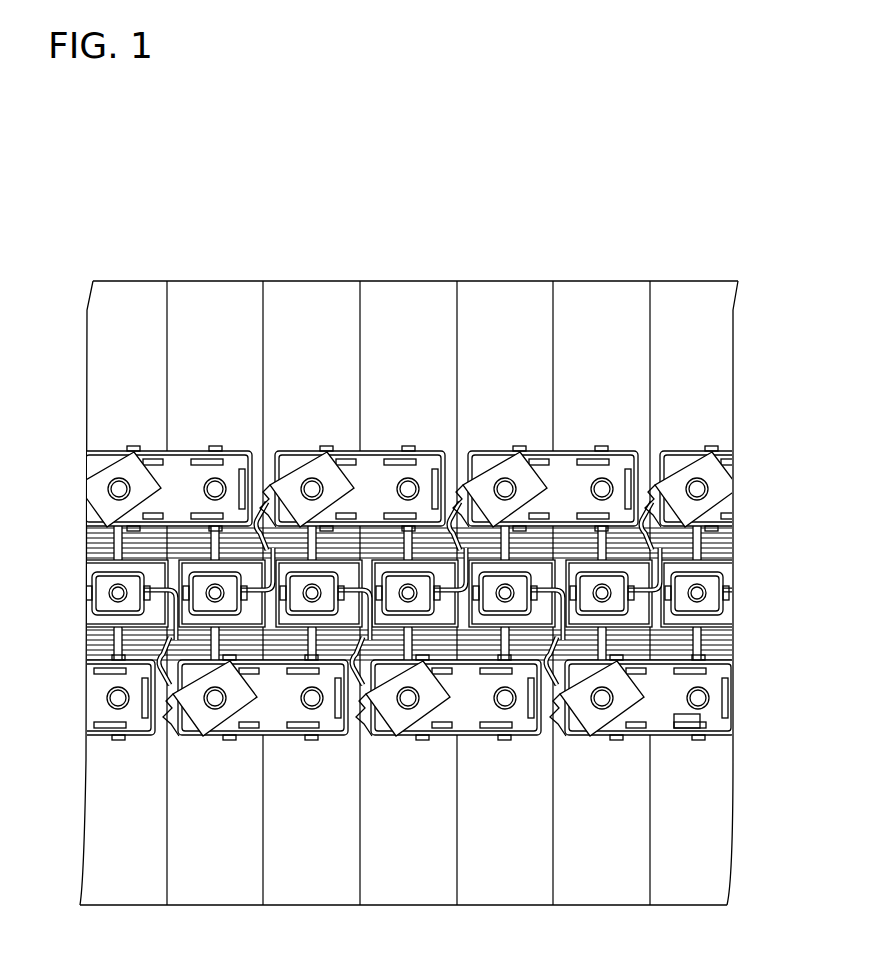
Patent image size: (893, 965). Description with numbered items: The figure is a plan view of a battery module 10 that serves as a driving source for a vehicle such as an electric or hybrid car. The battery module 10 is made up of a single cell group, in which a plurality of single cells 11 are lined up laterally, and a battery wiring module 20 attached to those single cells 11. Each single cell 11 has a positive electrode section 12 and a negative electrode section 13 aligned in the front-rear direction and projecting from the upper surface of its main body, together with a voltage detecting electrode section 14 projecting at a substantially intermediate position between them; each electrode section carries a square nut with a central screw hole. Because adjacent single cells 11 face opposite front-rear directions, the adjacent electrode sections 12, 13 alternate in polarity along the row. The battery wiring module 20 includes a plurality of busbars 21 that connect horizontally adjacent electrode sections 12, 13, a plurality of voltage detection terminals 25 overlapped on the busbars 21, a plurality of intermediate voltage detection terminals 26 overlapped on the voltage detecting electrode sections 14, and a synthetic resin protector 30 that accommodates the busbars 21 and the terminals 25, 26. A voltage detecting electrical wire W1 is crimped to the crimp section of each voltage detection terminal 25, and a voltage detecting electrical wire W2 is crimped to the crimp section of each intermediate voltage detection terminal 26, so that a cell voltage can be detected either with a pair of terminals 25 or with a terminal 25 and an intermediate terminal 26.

The battery module 10 is at (362, 208).
The single cell 11 is at (122, 293).
The positive electrode section 12 is at (311, 478).
The negative electrode section 13 is at (411, 476).
The voltage detecting electrode section 14 is at (217, 588).
The battery wiring module 20 is at (699, 434).
The busbar 21 is at (370, 457).
The voltage detection terminal 25 is at (95, 489).
The intermediate voltage detection terminal 26 is at (207, 607).
The protector 30 is at (686, 728).
The voltage detecting electrical wire W1 is at (455, 530).
The voltage detecting electrical wire W2 is at (657, 548).